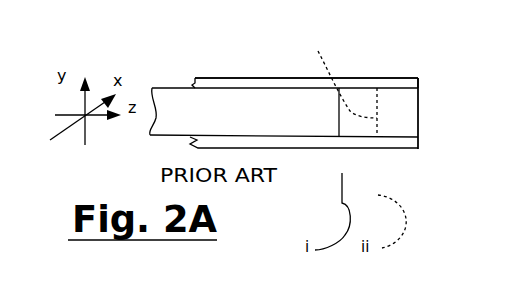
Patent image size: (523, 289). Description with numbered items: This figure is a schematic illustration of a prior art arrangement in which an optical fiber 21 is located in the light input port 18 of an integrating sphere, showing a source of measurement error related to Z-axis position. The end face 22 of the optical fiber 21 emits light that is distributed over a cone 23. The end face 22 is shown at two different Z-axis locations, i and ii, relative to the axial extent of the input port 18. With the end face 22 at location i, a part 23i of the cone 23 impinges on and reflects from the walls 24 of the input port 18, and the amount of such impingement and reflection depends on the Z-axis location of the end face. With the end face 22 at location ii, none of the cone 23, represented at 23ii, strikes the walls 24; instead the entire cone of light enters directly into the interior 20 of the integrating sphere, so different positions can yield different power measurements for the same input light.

The input port 18 is at (200, 76).
The interior 20 is at (305, 107).
The optical fiber 21 is at (229, 110).
The end face 22 is at (338, 118).
The cone of light 23 is at (436, 92).
The part of cone of light 23i is at (377, 118).
The cone of light at location ii 23ii is at (420, 77).
The walls 24 is at (393, 150).